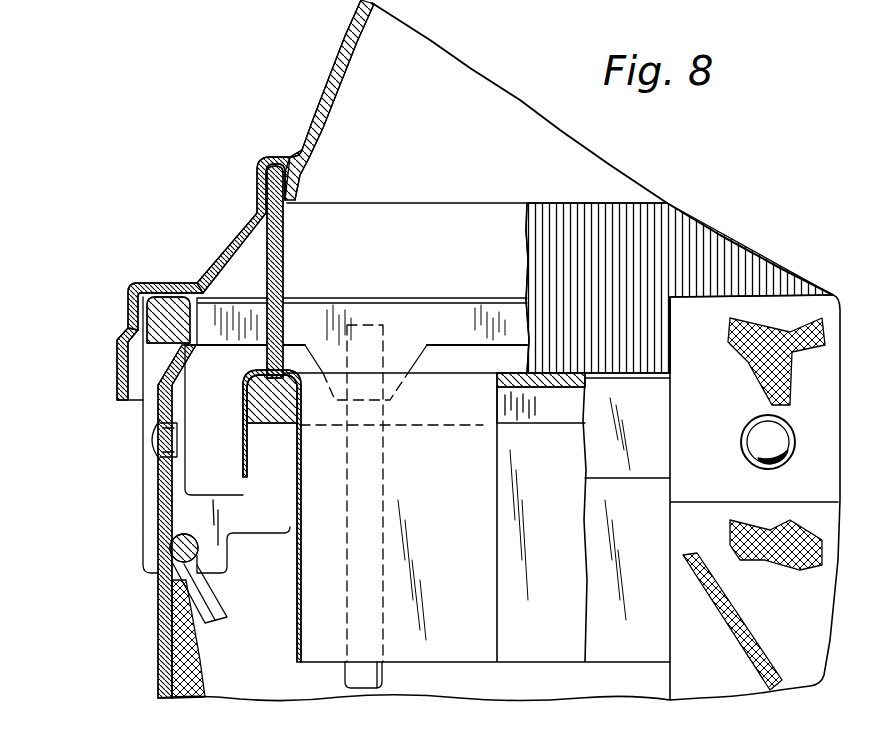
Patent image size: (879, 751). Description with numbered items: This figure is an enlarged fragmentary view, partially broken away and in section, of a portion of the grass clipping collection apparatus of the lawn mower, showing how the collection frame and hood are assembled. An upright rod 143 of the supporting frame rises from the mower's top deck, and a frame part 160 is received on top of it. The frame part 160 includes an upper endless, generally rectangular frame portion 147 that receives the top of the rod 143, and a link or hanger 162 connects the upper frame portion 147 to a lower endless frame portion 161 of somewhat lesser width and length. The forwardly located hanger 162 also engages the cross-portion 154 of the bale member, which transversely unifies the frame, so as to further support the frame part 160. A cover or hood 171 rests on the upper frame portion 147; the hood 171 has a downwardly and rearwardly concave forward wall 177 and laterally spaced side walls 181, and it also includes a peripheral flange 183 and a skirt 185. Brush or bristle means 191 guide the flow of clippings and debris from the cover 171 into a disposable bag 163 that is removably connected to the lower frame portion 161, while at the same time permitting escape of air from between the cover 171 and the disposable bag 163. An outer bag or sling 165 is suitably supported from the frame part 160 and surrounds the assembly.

The upright rod 143 is at (367, 490).
The upper frame portion 147 is at (163, 318).
The cross-portion 154 is at (172, 547).
The frame part 160 is at (232, 250).
The lower frame portion 161 is at (250, 398).
The link or hanger 162 is at (233, 518).
The disposable bag 163 is at (292, 648).
The outer bag or sling 165 is at (175, 640).
The cover or hood 171 is at (533, 147).
The forward wall 177 is at (312, 104).
The side wall 181 is at (483, 108).
The peripheral flange 183 is at (117, 313).
The skirt 185 is at (133, 377).
The brush or bristle means 191 is at (292, 270).